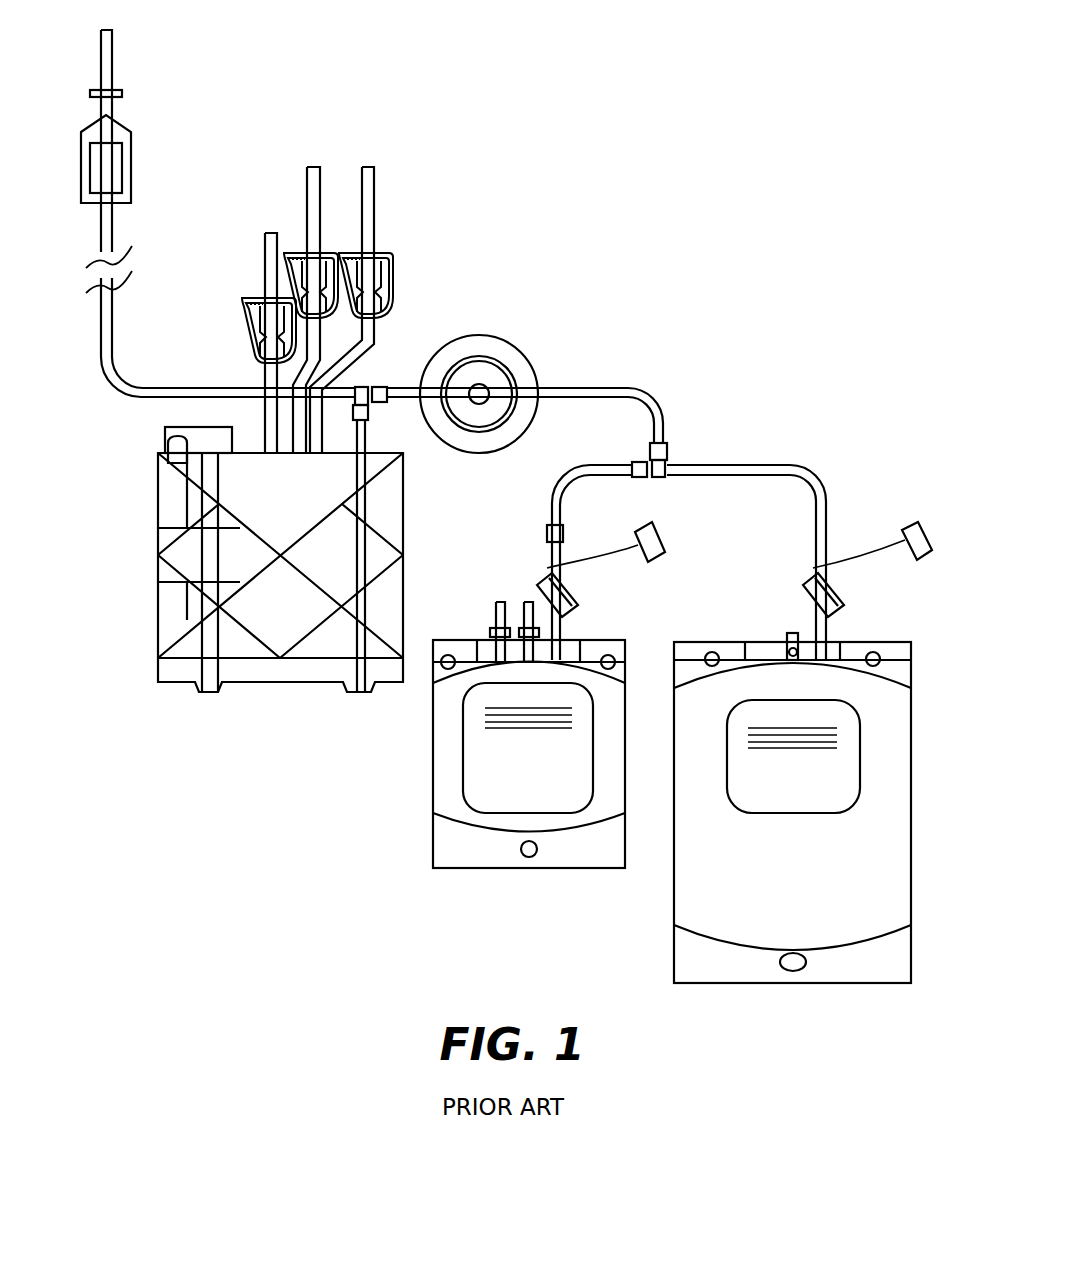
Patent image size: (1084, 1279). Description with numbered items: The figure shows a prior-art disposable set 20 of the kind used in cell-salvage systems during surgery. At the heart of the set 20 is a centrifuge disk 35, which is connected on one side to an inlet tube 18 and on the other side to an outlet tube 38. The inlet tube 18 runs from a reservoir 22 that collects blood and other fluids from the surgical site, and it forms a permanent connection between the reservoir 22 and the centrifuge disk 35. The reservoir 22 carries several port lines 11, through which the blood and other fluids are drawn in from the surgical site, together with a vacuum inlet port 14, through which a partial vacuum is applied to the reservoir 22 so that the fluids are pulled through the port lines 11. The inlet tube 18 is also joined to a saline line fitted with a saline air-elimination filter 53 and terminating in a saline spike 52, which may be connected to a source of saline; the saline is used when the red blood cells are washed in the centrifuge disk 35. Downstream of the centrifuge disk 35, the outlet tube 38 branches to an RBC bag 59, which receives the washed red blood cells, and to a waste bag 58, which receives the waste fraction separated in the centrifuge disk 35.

The port lines 11 is at (268, 232).
The vacuum inlet port 14 is at (172, 440).
The inlet tube 18 is at (403, 388).
The disposable set 20 is at (674, 258).
The reservoir 22 is at (249, 601).
The centrifuge disk 35 is at (479, 336).
The outlet tube 38 is at (571, 388).
The saline spike 52 is at (113, 50).
The saline air-elimination filter 53 is at (131, 140).
The waste bag 58 is at (842, 984).
The RBC bag 59 is at (583, 870).